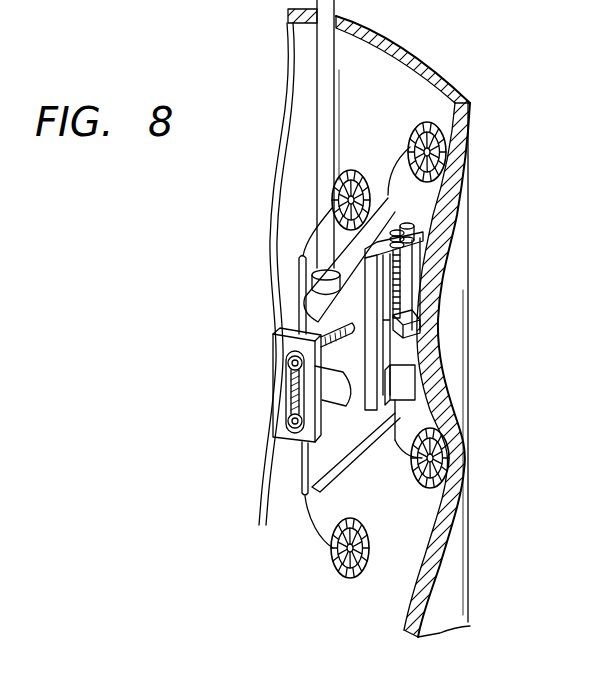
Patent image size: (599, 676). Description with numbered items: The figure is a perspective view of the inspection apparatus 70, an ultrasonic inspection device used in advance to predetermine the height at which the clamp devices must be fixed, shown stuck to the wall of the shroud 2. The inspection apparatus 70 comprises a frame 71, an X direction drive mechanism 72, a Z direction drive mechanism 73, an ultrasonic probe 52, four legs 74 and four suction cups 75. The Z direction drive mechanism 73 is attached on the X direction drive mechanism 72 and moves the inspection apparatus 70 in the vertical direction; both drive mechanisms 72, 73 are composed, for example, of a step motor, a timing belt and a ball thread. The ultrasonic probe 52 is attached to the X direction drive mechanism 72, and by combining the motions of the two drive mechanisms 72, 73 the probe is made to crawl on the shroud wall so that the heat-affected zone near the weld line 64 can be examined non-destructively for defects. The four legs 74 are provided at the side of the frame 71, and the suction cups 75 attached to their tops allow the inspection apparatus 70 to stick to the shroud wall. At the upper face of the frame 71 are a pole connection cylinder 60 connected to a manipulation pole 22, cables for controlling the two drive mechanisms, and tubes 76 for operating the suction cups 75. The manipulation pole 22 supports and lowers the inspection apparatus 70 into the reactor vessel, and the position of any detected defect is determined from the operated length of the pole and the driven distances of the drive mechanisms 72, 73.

The shroud 2 is at (447, 608).
The manipulation pole 22 is at (334, 54).
The ultrasonic probe 52 is at (427, 343).
The pole connection cylinder 60 is at (312, 293).
The weld line 64 is at (458, 322).
The inspection apparatus 70 is at (276, 420).
The frame 71 is at (272, 347).
The X direction drive mechanism 72 is at (300, 398).
The Z direction drive mechanism 73 is at (400, 287).
The legs 74 is at (302, 485).
The suction cups 75 is at (338, 572).
The tubes 76 is at (287, 63).